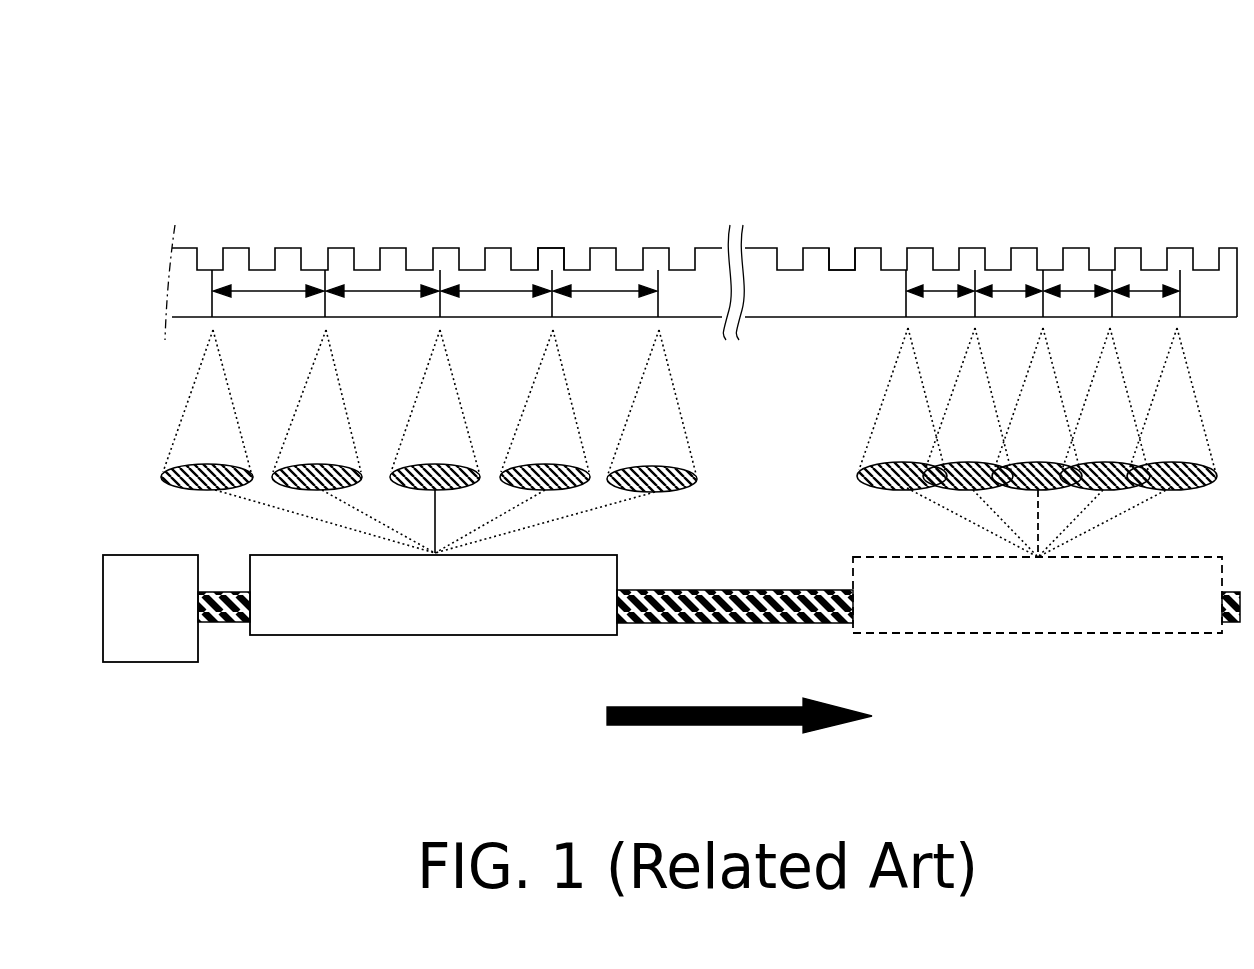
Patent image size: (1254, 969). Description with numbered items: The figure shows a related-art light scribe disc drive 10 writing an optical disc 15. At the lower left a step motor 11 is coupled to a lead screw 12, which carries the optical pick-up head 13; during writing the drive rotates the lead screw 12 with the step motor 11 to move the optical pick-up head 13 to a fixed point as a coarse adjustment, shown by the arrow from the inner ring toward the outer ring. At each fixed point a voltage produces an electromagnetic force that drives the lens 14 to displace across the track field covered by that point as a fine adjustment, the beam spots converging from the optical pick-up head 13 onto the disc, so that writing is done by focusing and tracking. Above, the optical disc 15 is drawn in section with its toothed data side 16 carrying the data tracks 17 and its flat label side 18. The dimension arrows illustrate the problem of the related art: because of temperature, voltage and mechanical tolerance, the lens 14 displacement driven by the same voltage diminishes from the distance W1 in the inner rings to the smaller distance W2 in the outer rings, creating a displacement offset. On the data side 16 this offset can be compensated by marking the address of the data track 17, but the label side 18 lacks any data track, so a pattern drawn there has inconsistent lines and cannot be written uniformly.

The light scribe disc drive 10 is at (990, 58).
The step motor 11 is at (160, 662).
The lead screw 12 is at (807, 590).
The optical pick-up head 13 is at (312, 635).
The lens 14 is at (692, 487).
The optical disc 15 is at (1090, 236).
The data side 16 is at (540, 248).
The data track 17 is at (840, 268).
The label side 18 is at (812, 317).
The distance in inner rings W1 is at (367, 290).
The distance in outer rings W2 is at (942, 290).